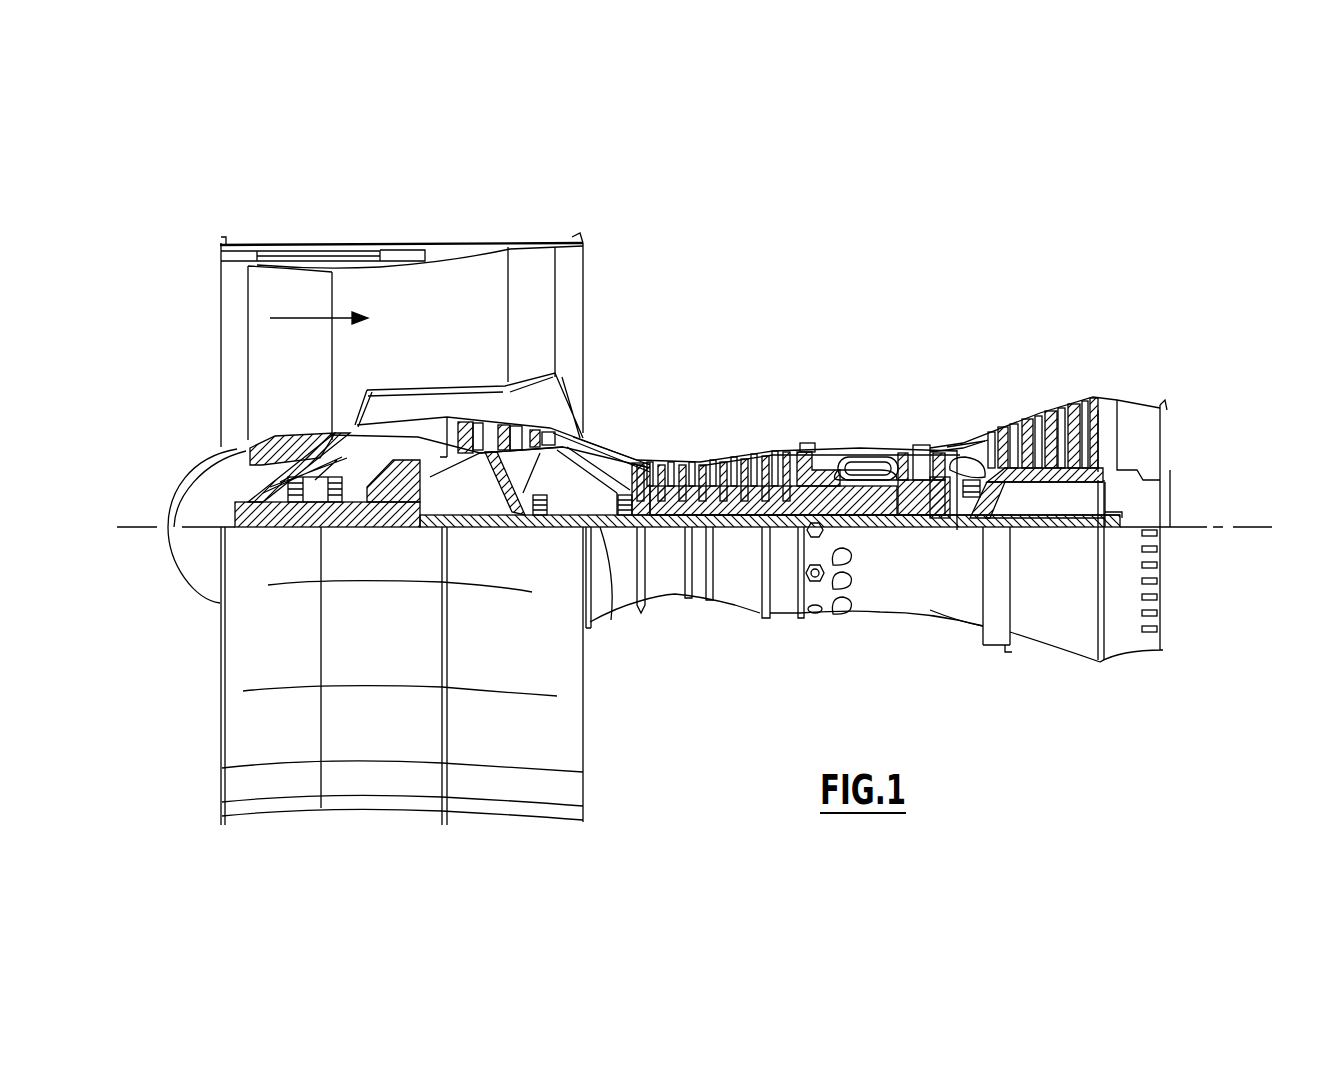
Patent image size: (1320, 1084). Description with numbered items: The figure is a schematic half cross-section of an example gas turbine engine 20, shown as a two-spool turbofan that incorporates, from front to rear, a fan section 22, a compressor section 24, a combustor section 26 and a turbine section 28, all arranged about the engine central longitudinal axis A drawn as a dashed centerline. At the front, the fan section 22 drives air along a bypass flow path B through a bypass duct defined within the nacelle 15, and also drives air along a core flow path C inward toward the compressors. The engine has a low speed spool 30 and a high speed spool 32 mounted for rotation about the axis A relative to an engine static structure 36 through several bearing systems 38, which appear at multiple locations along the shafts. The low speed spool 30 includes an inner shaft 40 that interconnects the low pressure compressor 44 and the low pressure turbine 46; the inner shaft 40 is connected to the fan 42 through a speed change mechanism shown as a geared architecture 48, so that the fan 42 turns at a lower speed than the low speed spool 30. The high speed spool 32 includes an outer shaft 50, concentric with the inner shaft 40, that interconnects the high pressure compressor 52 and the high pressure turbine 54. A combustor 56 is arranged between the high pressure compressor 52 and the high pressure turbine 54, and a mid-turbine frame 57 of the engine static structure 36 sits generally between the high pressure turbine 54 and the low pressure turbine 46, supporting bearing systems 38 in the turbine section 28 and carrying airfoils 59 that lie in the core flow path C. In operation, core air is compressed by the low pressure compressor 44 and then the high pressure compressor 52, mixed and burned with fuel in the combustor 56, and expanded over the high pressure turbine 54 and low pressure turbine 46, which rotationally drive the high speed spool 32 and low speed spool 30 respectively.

The nacelle 15 is at (402, 248).
The gas turbine engine 20 is at (862, 296).
The fan section 22 is at (333, 238).
The compressor section 24 is at (632, 433).
The combustor section 26 is at (855, 422).
The turbine section 28 is at (1000, 388).
The low speed spool 30 is at (740, 530).
The high speed spool 32 is at (783, 485).
The engine static structure 36 is at (780, 618).
The bearing systems 38 is at (540, 530).
The inner shaft 40 is at (610, 622).
The fan 42 is at (274, 372).
The low pressure compressor 44 is at (507, 437).
The low pressure turbine 46 is at (1048, 420).
The geared architecture 48 is at (410, 507).
The outer shaft 50 is at (850, 518).
The high pressure compressor 52 is at (713, 468).
The high pressure turbine 54 is at (930, 445).
The combustor 56 is at (860, 468).
The mid-turbine frame 57 is at (962, 444).
The airfoils 59 is at (990, 494).
The engine central longitudinal axis A is at (1258, 527).
The bypass flow path B is at (305, 318).
The core flow path C is at (408, 423).